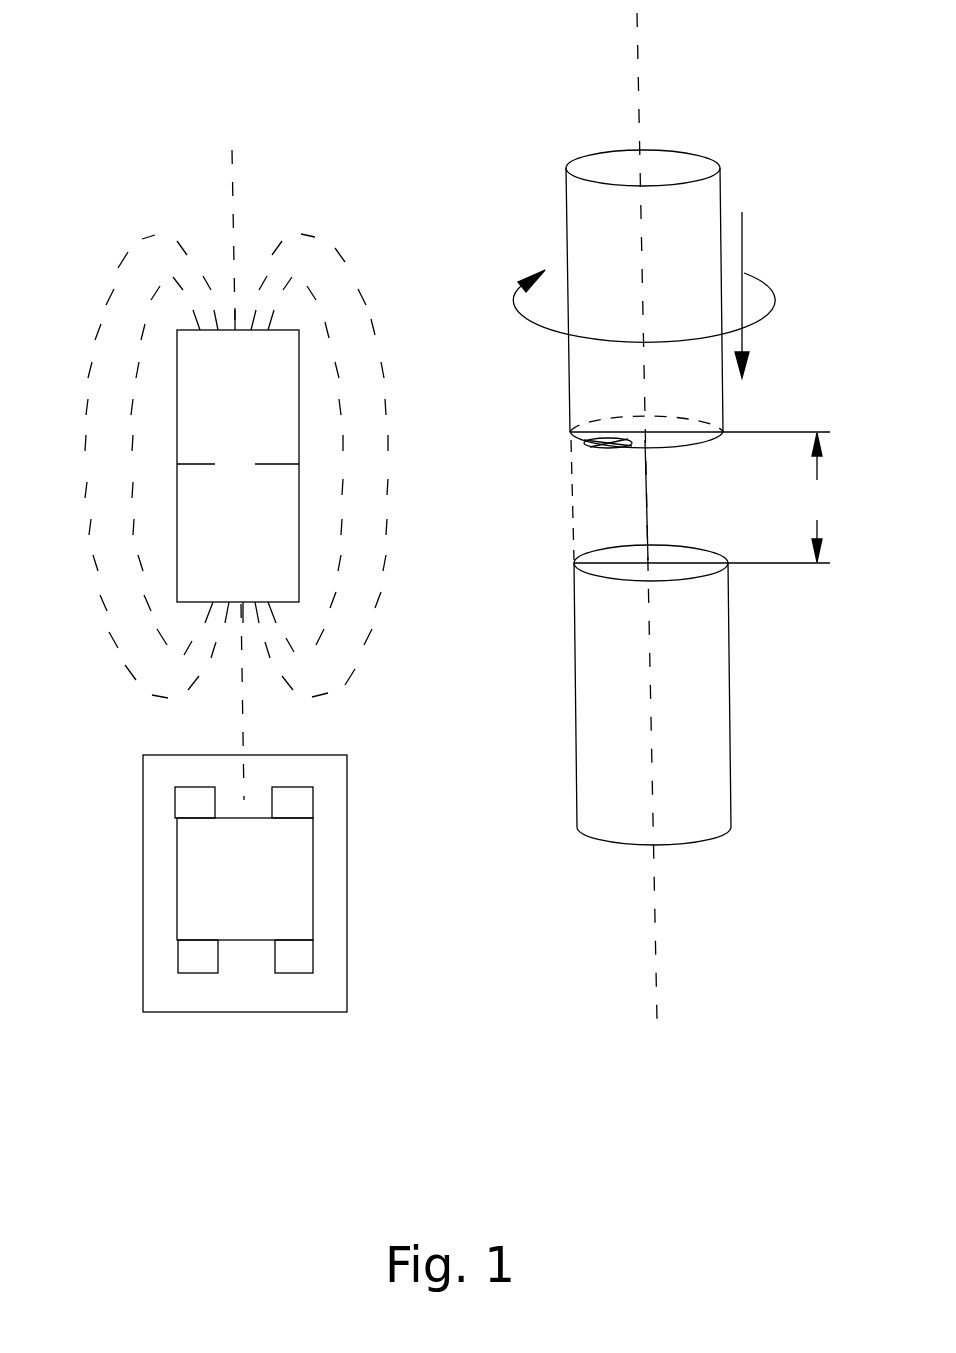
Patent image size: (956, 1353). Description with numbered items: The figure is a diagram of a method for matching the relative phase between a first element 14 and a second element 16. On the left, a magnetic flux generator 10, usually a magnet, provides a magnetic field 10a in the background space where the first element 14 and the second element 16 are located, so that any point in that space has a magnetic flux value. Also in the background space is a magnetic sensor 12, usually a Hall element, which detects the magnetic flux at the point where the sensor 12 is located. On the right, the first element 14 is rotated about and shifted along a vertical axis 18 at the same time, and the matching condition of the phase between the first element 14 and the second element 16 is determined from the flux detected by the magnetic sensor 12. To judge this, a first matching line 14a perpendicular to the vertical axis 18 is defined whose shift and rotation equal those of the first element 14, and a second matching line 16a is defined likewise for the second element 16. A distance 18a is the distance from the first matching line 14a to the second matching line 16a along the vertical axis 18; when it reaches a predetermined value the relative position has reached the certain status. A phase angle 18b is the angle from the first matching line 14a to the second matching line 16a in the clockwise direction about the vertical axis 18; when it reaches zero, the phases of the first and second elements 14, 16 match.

The magnetic flux generator 10 is at (253, 482).
The magnetic field 10a is at (231, 200).
The magnetic sensor 12 is at (243, 1013).
The first element 14 is at (708, 230).
The first matching line 14a is at (617, 446).
The second element 16 is at (717, 625).
The second matching line 16a is at (608, 566).
The vertical axis 18 is at (640, 48).
The distance 18a is at (815, 497).
The phase angle 18b is at (577, 437).